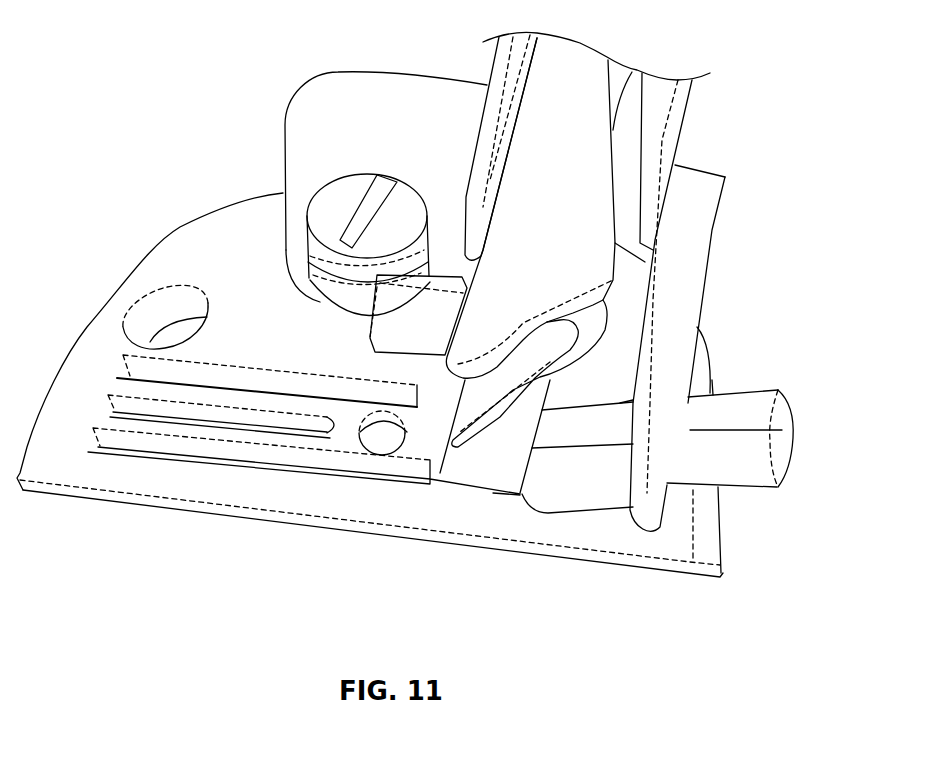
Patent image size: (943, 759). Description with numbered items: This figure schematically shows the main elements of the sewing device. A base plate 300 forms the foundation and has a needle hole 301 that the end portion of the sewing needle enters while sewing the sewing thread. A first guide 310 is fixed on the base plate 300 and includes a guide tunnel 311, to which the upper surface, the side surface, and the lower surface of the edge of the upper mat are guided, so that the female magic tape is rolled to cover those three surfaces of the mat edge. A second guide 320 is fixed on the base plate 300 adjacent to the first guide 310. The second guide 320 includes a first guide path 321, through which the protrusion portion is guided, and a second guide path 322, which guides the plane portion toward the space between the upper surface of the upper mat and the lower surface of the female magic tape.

The base plate 300 is at (210, 236).
The needle hole 301 is at (383, 440).
The first guide 310 is at (568, 280).
The guide tunnel 311 is at (513, 387).
The second guide 320 is at (763, 380).
The first guide path 321 is at (779, 465).
The second guide path 322 is at (788, 410).